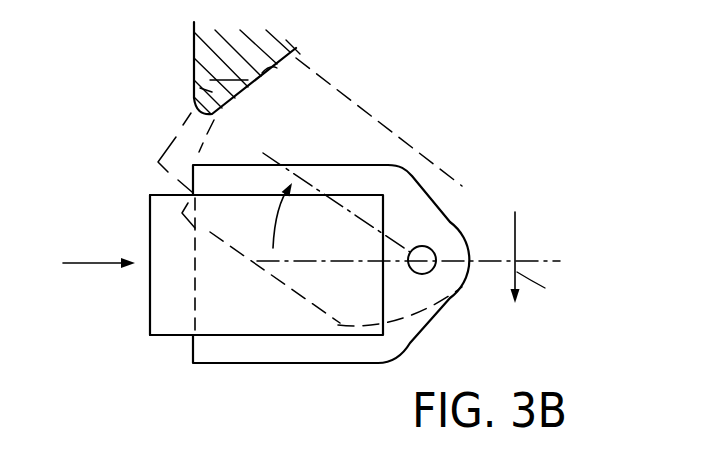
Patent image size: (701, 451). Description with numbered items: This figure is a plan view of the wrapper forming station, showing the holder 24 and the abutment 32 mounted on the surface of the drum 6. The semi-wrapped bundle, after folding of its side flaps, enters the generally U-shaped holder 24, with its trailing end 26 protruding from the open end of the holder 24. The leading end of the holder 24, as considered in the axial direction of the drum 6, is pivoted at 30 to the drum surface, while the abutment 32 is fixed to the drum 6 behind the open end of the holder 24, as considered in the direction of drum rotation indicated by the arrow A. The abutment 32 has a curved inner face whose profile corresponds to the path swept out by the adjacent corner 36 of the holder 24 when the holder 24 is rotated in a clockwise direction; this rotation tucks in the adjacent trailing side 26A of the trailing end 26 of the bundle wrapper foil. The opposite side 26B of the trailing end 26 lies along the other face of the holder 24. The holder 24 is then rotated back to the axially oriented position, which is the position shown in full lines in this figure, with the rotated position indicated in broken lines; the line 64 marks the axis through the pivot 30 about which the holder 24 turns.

The holder 24 is at (340, 366).
The trailing end 26 is at (135, 332).
The trailing side 26A is at (159, 195).
The lower side of holder block 26B is at (168, 340).
The pivot 30 is at (413, 250).
The abutment 32 is at (197, 57).
The adjacent corner 36 is at (195, 165).
The pivot axis 64 is at (537, 258).
The drum 6 is at (468, 362).